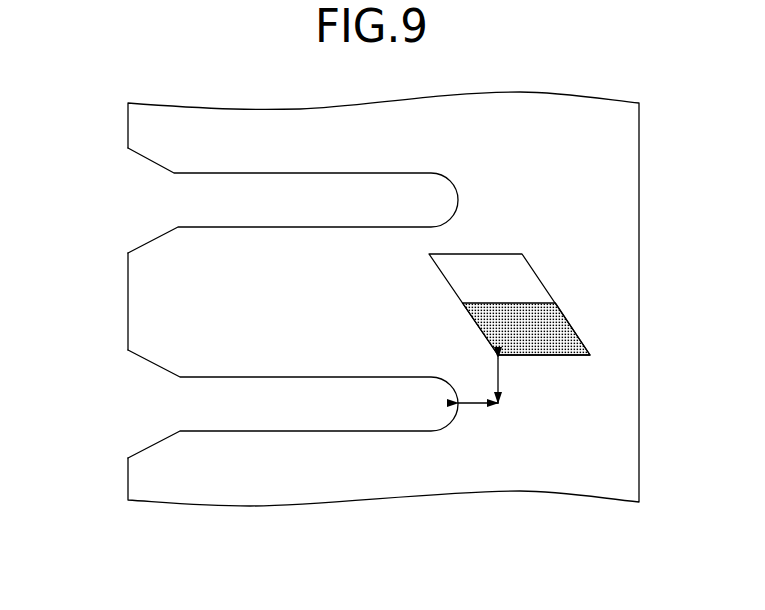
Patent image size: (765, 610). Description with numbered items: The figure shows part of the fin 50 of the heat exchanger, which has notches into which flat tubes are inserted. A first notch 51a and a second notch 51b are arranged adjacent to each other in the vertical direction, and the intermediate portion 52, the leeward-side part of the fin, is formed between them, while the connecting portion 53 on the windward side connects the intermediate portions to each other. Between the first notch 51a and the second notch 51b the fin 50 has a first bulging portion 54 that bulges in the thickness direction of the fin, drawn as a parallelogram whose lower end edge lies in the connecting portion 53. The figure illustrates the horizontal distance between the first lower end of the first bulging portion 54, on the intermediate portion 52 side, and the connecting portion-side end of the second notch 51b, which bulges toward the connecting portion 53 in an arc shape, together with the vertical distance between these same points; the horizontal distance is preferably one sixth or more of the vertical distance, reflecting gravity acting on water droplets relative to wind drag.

The fin 50 is at (639, 250).
The first notch 51a is at (200, 200).
The second notch 51b is at (200, 404).
The intermediate portion 52 is at (203, 302).
The connecting portion 53 is at (610, 398).
The first bulging portion 54 is at (500, 292).